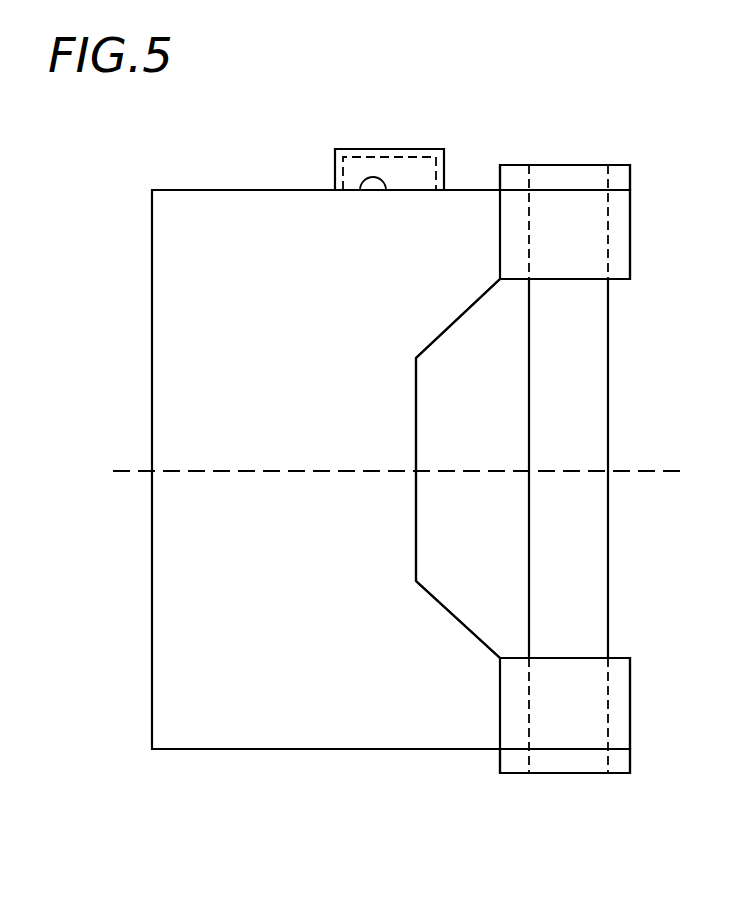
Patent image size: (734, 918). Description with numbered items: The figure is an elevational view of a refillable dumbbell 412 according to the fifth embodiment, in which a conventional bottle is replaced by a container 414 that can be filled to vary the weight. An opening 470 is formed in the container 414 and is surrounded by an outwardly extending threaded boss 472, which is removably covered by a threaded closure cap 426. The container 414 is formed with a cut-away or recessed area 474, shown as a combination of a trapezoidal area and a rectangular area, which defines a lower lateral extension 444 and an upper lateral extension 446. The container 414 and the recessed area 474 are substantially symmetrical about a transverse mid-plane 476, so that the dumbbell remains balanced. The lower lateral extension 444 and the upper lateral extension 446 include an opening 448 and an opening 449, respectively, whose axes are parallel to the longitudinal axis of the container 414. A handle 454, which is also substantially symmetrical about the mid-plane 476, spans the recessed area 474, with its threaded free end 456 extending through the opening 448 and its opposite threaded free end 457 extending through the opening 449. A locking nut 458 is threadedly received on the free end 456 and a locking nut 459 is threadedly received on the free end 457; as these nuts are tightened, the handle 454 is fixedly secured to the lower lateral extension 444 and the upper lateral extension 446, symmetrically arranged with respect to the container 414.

The refillable dumbbell 412 is at (384, 469).
The container 414 is at (152, 524).
The threaded closure cap 426 is at (401, 166).
The threaded boss 472 is at (356, 157).
The opening 470 is at (367, 200).
The upper lateral extension 446 is at (628, 230).
The locking nut 459 is at (612, 163).
The lower lateral extension 444 is at (625, 693).
The locking nut 458 is at (512, 773).
The opening 449 is at (592, 272).
The free end 457 is at (570, 287).
The handle 454 is at (597, 440).
The free end 456 is at (570, 653).
The opening 448 is at (608, 673).
The transverse mid-plane 476 is at (293, 470).
The recessed area 474 is at (478, 580).